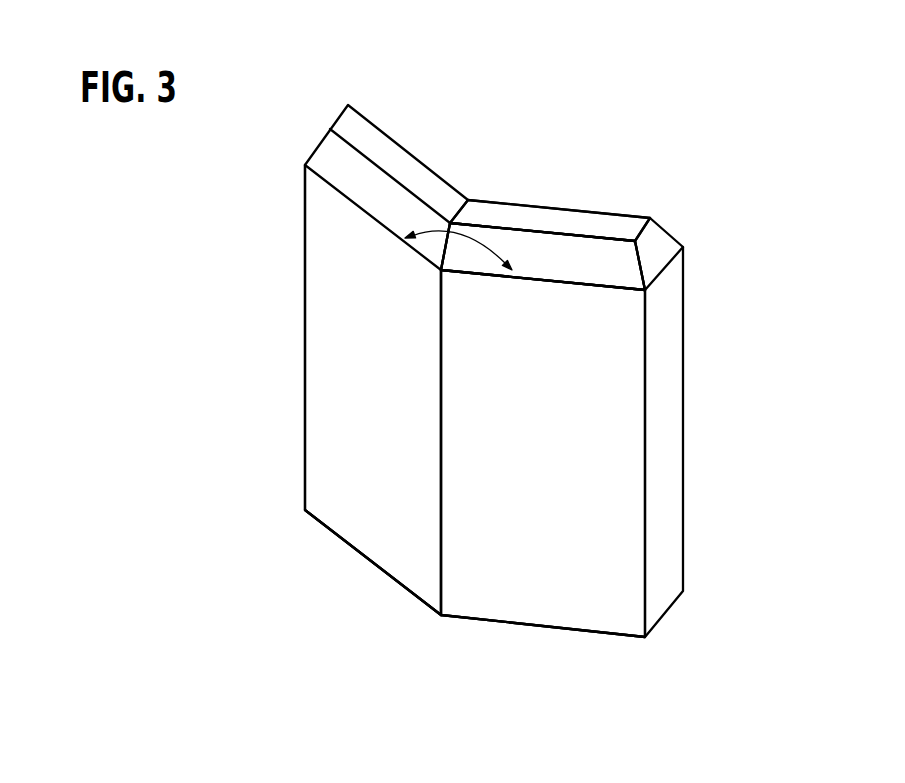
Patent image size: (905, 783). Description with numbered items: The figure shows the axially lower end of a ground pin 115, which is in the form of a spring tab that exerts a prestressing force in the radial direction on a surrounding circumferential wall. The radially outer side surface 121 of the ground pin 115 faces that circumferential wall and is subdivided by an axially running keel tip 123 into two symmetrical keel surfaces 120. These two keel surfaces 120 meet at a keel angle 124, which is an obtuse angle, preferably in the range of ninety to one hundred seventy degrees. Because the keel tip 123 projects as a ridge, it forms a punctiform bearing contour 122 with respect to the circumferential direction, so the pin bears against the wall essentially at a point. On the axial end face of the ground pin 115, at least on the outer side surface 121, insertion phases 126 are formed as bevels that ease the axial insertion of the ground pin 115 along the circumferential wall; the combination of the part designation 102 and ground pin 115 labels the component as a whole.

The battery cell 102 is at (401, 371).
The ground pin 115 is at (279, 255).
The keel surfaces 120 is at (499, 401).
The side surface 121 is at (349, 332).
The punctiform bearing contour 122 is at (438, 626).
The keel tip 123 is at (440, 422).
The keel angle 124 is at (473, 235).
The insertion phases 126 is at (587, 262).